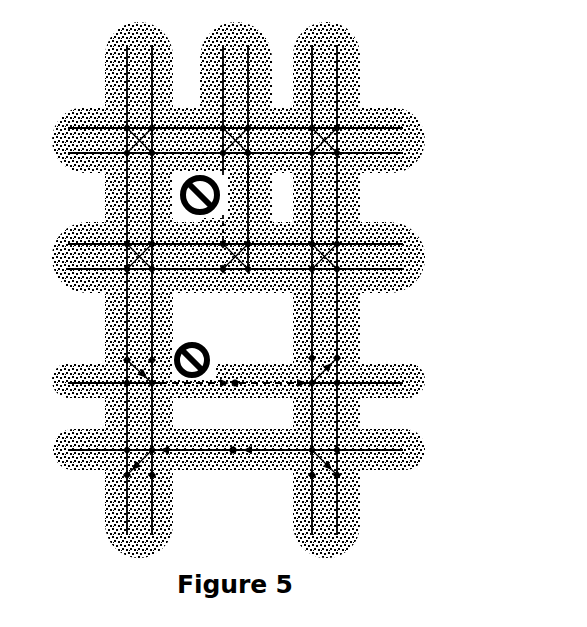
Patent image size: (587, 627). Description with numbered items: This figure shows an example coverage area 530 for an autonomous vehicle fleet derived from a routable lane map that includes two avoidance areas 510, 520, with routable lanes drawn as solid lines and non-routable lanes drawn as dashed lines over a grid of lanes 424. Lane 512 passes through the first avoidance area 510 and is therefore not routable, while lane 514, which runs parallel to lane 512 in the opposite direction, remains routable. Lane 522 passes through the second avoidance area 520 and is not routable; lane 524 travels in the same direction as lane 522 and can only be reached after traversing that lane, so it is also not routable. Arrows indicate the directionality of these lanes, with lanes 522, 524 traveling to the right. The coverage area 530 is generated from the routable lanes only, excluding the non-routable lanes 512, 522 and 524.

The coverage area 530 is at (386, 88).
The conductive line grid 424 is at (466, 193).
The avoidance area 510 is at (176, 176).
The lane 512 is at (233, 211).
The lane 514 is at (257, 181).
The avoidance area 520 is at (202, 335).
The lane 522 is at (183, 393).
The lane 524 is at (252, 393).